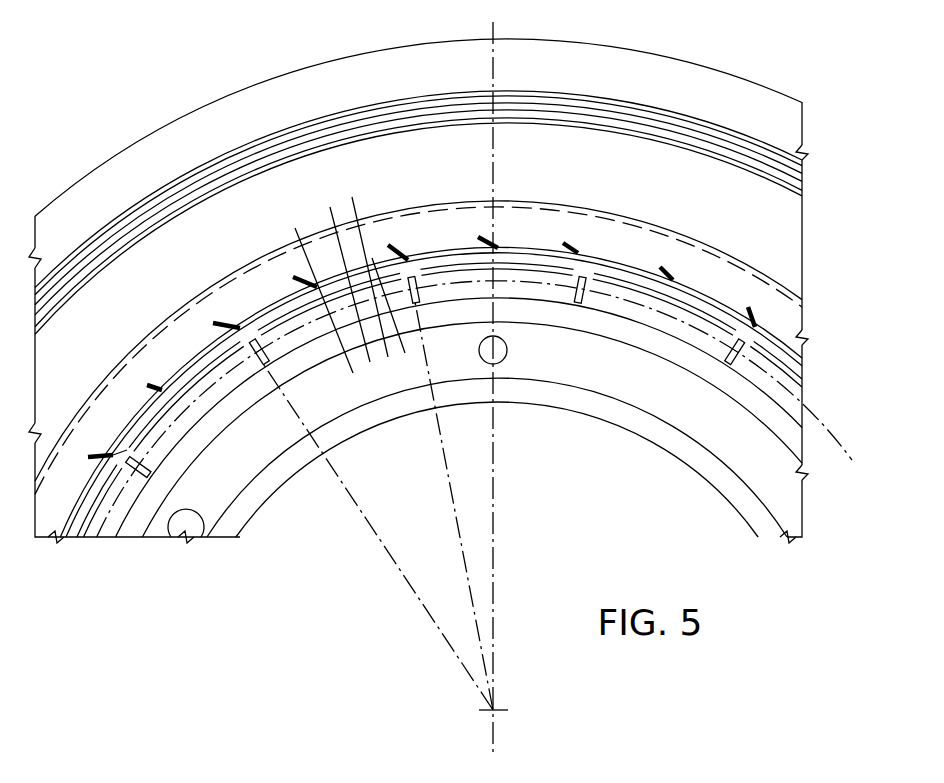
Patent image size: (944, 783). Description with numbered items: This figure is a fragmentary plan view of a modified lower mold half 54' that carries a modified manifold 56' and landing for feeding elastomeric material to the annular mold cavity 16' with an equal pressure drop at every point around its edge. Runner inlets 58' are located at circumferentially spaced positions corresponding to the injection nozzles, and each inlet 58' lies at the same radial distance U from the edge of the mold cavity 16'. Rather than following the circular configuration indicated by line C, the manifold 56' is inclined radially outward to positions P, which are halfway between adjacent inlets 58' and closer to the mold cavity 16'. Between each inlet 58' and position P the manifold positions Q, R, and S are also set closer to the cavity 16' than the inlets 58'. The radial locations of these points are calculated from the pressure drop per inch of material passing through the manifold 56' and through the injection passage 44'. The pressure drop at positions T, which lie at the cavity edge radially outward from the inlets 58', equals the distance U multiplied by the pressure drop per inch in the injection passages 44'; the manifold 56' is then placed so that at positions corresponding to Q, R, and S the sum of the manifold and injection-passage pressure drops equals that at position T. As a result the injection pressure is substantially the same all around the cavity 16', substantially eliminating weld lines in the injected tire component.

The mold cavity 16' is at (447, 347).
The injection passage 44' is at (439, 366).
The lower mold half 54' is at (501, 429).
The manifold 56' is at (463, 392).
The runner inlets 58' is at (430, 431).
The line of circular configuration C is at (822, 420).
The manifold positions P is at (160, 362).
The manifold position Q is at (316, 288).
The manifold position R is at (342, 274).
The manifold position S is at (373, 263).
The positions T is at (240, 312).
The distance U is at (128, 452).